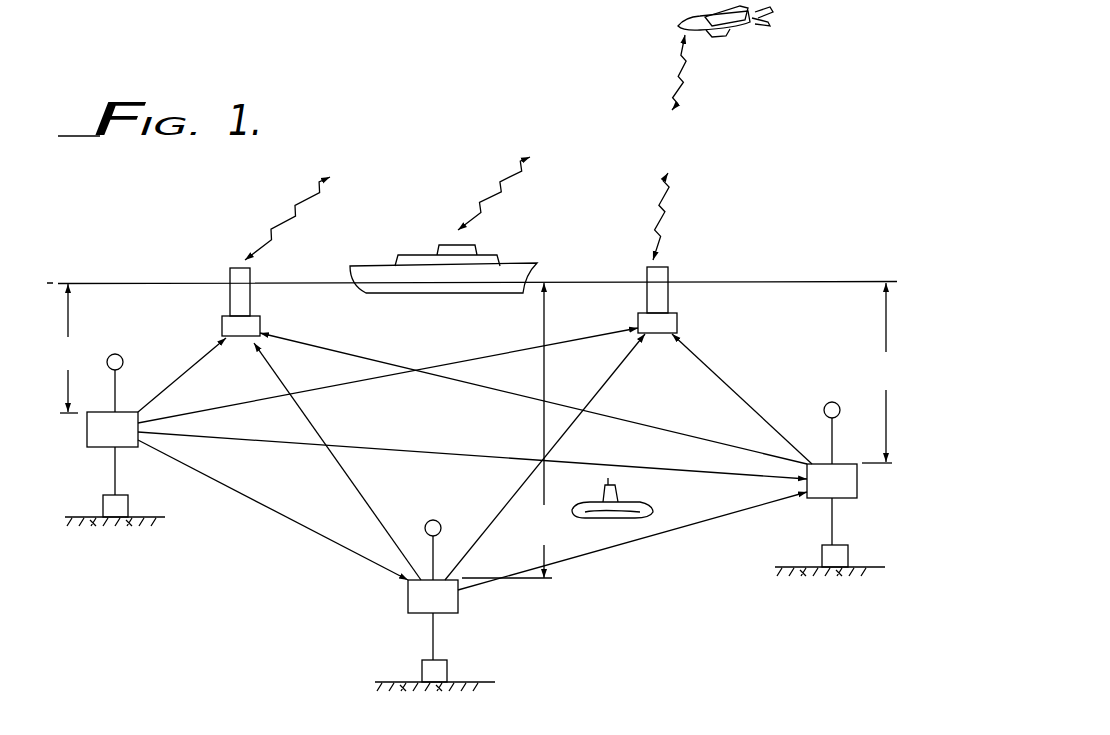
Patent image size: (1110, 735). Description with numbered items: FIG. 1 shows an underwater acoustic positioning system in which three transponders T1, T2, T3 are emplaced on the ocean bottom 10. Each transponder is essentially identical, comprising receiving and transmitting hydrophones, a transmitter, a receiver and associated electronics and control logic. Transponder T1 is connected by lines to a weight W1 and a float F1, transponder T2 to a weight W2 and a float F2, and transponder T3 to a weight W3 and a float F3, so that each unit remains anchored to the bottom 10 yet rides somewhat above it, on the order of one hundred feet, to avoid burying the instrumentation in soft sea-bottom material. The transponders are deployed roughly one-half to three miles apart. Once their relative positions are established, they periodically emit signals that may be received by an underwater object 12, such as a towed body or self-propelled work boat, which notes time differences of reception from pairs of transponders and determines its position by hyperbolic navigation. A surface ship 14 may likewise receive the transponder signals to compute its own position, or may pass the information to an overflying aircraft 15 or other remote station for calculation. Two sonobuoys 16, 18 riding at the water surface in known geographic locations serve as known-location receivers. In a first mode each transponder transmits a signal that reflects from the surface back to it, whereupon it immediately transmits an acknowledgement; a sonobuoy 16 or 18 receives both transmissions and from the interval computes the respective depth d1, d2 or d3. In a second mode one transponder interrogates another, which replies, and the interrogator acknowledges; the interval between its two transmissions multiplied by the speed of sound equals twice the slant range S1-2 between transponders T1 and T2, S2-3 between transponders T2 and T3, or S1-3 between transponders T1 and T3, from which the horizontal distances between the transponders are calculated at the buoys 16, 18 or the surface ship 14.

The ocean bottom 10 is at (80, 517).
The underwater object 12 is at (655, 506).
The surface ship 14 is at (528, 272).
The overflying aircraft 15 is at (742, 28).
The sonobuoy 16 is at (230, 272).
The sonobuoy 18 is at (668, 270).
The transponder T1 is at (87, 432).
The transponder T2 is at (408, 600).
The transponder T3 is at (857, 488).
The float F1 is at (122, 358).
The float F2 is at (440, 524).
The float F3 is at (850, 400).
The weight W1 is at (128, 506).
The weight W2 is at (447, 673).
The weight W3 is at (822, 553).
The depth d1 is at (67, 348).
The depth d2 is at (508, 430).
The depth d3 is at (879, 373).
The slant range distance S1-2 is at (262, 491).
The slant range distance S1-3 is at (572, 457).
The slant range distance S2-3 is at (614, 548).